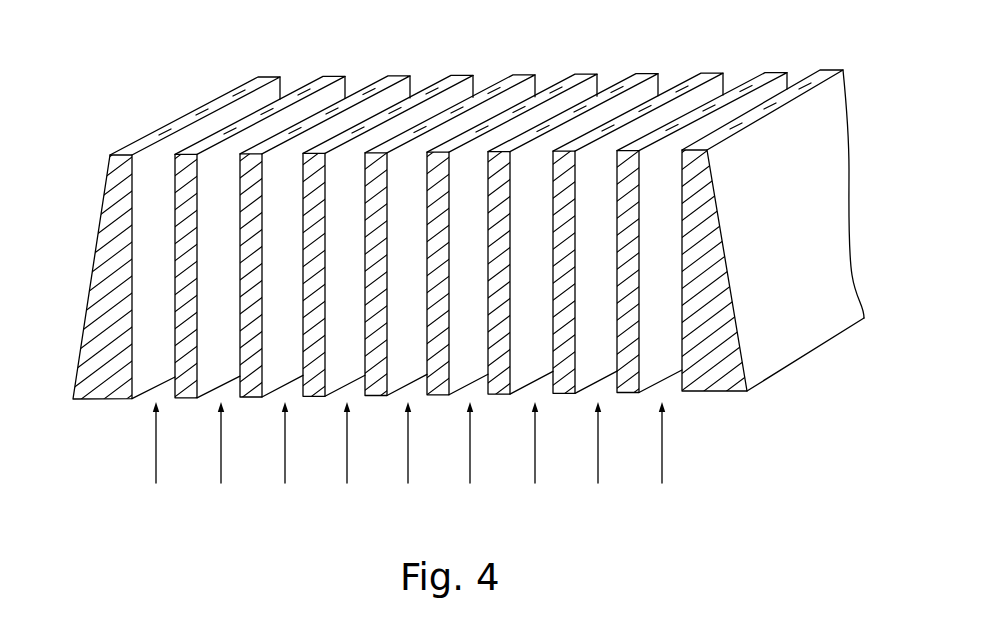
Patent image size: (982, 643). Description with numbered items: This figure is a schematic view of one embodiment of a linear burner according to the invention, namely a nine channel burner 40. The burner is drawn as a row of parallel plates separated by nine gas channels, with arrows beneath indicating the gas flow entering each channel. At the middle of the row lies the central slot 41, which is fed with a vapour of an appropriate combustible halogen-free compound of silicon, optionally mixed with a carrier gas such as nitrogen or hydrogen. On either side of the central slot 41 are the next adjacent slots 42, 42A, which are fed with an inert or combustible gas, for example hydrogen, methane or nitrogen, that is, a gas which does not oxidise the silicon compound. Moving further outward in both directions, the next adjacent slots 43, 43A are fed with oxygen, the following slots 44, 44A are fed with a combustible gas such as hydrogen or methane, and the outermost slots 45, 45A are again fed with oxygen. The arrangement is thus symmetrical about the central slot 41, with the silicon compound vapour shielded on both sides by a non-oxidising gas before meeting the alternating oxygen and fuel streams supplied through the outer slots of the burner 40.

The nine channel burner 40 is at (786, 331).
The central slot 41 is at (514, 90).
The slot 42 is at (571, 97).
The slot 43 is at (626, 97).
The slot 44 is at (694, 96).
The slot 45 is at (766, 93).
The slot 42A is at (390, 123).
The slot 43A is at (318, 125).
The slot 44A is at (245, 138).
The slot 45A is at (153, 153).